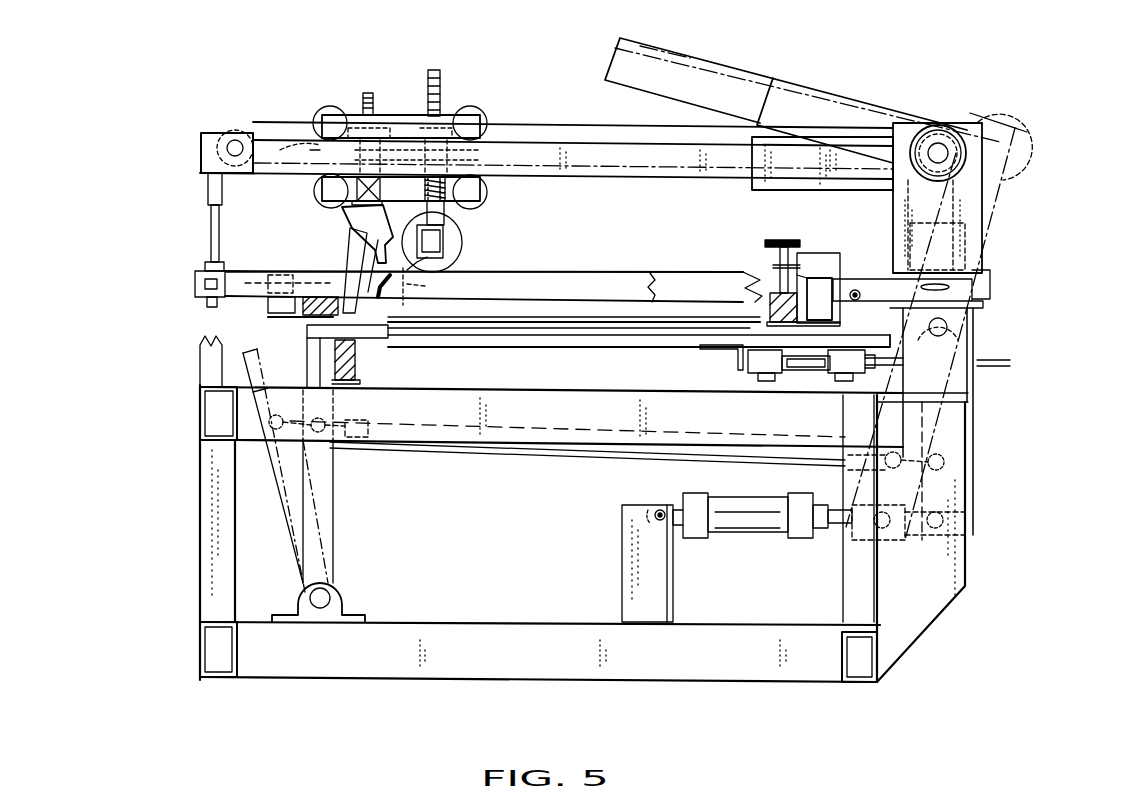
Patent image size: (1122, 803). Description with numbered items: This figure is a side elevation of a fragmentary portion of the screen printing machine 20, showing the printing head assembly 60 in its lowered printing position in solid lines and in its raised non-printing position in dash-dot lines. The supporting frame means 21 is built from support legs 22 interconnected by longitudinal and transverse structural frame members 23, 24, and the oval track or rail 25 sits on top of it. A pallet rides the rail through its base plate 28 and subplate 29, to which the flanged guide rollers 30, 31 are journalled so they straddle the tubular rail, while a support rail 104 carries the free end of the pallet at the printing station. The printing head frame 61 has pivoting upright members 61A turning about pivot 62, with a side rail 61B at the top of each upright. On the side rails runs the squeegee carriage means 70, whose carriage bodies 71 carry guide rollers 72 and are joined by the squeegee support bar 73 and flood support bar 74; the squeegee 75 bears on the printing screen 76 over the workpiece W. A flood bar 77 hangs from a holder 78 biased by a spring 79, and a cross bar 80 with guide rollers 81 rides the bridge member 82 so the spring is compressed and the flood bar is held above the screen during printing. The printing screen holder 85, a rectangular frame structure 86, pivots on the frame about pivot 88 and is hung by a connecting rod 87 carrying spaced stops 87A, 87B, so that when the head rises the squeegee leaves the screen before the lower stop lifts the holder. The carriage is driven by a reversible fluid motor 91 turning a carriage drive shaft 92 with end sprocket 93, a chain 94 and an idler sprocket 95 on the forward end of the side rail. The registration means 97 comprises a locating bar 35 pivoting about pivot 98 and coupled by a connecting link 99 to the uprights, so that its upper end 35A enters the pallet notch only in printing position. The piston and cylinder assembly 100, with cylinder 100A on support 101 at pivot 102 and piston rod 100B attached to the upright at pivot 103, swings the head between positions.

The screen printing machine 20 is at (1057, 137).
The supporting frame means 21 is at (188, 501).
The support legs 22 is at (205, 560).
The structural frame members 23 is at (441, 402).
The structural frame members 24 is at (198, 422).
The oval track or rail 25 is at (806, 375).
The base plate 28 is at (835, 346).
The subplate 29 is at (735, 352).
The guide rollers 30 is at (752, 384).
The guide rollers 31 is at (862, 382).
The locating bar 35 is at (336, 518).
The upper end of locating bar 35A is at (260, 368).
The printing head assembly 60 is at (804, 64).
The printing head frame 61 is at (985, 175).
The upright members 61A is at (965, 242).
The side rail 61B is at (662, 60).
The pivot 62 is at (950, 325).
The squeegee carriage means 70 is at (491, 50).
The carriage bodies 71 is at (395, 115).
The guide rollers 72 is at (330, 108).
The squeegee support bar 73 is at (320, 148).
The flood support bar 74 is at (490, 162).
The squeegee 75 is at (345, 250).
The printing screen 76 is at (525, 318).
The flood bar 77 is at (425, 286).
The holder 78 is at (433, 70).
The spring 79 is at (424, 190).
The cross bar 80 is at (450, 232).
The guide rollers 81 is at (447, 245).
The bridge member 82 is at (650, 285).
The printing screen holder 85 is at (249, 262).
The rectangular frame structure 86 is at (815, 276).
The connecting rod 87 is at (212, 220).
The stop 87A is at (210, 262).
The stop 87B is at (200, 283).
The pivot 88 is at (850, 290).
The reversible fluid motor 91 is at (950, 140).
The carriage drive shaft 92 is at (948, 147).
The end sprocket 93 is at (938, 128).
The chain 94 is at (540, 125).
The idler sprocket 95 is at (232, 130).
The registration means 97 is at (358, 486).
The pivot 98 is at (340, 600).
The connecting link 99 is at (600, 458).
The piston and cylinder assembly 100 is at (713, 576).
The cylinder 100A is at (738, 540).
The piston rod 100B is at (828, 536).
The support 101 is at (622, 572).
The pivot 102 is at (658, 510).
The pivot 103 is at (940, 518).
The support rail 104 is at (355, 356).
The workpiece W is at (592, 318).